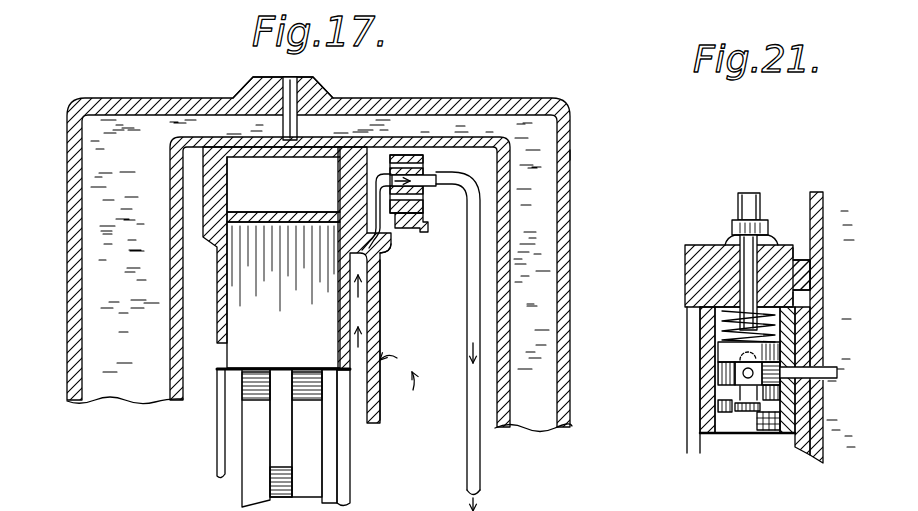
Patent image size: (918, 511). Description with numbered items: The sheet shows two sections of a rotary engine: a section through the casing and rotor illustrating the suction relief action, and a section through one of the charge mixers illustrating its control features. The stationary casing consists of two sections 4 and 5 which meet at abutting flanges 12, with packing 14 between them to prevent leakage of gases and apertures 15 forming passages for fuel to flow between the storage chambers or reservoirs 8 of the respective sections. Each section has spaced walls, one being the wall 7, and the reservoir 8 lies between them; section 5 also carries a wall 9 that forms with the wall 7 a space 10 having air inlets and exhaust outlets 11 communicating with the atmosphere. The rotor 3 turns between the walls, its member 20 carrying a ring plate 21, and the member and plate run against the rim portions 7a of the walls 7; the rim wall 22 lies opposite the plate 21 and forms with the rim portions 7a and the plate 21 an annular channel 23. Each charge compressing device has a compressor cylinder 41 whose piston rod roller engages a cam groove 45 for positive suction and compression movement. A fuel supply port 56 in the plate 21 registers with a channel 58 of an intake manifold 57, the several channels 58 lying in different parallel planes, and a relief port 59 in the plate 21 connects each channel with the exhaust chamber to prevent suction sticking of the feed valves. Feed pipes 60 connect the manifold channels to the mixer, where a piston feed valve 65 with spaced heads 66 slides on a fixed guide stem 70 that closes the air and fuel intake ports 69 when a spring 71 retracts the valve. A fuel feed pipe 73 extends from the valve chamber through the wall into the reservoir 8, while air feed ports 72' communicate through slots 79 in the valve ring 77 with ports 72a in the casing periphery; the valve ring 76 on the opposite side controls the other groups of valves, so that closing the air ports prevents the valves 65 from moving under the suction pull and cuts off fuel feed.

In FIG. 17, the rotor 3 is at (346, 312).
In FIG. 17, the casing section 4 is at (67, 160).
In FIG. 17, the casing section 5 is at (571, 152).
In FIG. 17, the wall 7 is at (558, 225).
In FIG. 17, the rim portion 7a is at (187, 136).
In FIG. 17, the storage chamber or reservoir 8 is at (557, 222).
In FIG. 21, the storage chamber or reservoir 8 is at (820, 223).
In FIG. 17, the wall 9 is at (381, 294).
In FIG. 17, the space 10 is at (405, 384).
In FIG. 17, the air inlets and exhaust outlets 11 is at (460, 125).
In FIG. 17, the abutting flange 12 is at (279, 99).
In FIG. 17, the packing 14 is at (319, 94).
In FIG. 17, the aperture 15 is at (365, 103).
In FIG. 17, the member 20 is at (216, 437).
In FIG. 17, the ring plate 21 is at (340, 237).
In FIG. 17, the rim wall 22 is at (167, 188).
In FIG. 17, the annular channel 23 is at (271, 245).
In FIG. 17, the compressor cylinder 41 is at (217, 321).
In FIG. 17, the cam groove 45 is at (242, 486).
In FIG. 17, the fuel supply port 56 is at (345, 197).
In FIG. 17, the intake manifold 57 is at (425, 219).
In FIG. 17, the channel or groove 58 is at (424, 165).
In FIG. 17, the relief port 59 is at (384, 252).
In FIG. 17, the feed pipe 60 is at (469, 303).
In FIG. 21, the feed pipe 60 is at (738, 209).
In FIG. 21, the piston feed valve 65 is at (729, 398).
In FIG. 21, the head 66 is at (723, 350).
In FIG. 21, the air and fuel intake port 69 is at (746, 376).
In FIG. 21, the fixed guide stem 70 is at (746, 411).
In FIG. 21, the spring 71 is at (740, 320).
In FIG. 21, the air feed port 72' is at (778, 238).
In FIG. 21, the port 72a is at (801, 240).
In FIG. 21, the fuel feed pipe 73 is at (837, 380).
In FIG. 21, the valve ring 76 is at (686, 297).
In FIG. 21, the valve ring 77 is at (813, 306).
In FIG. 21, the slot 79 is at (811, 276).